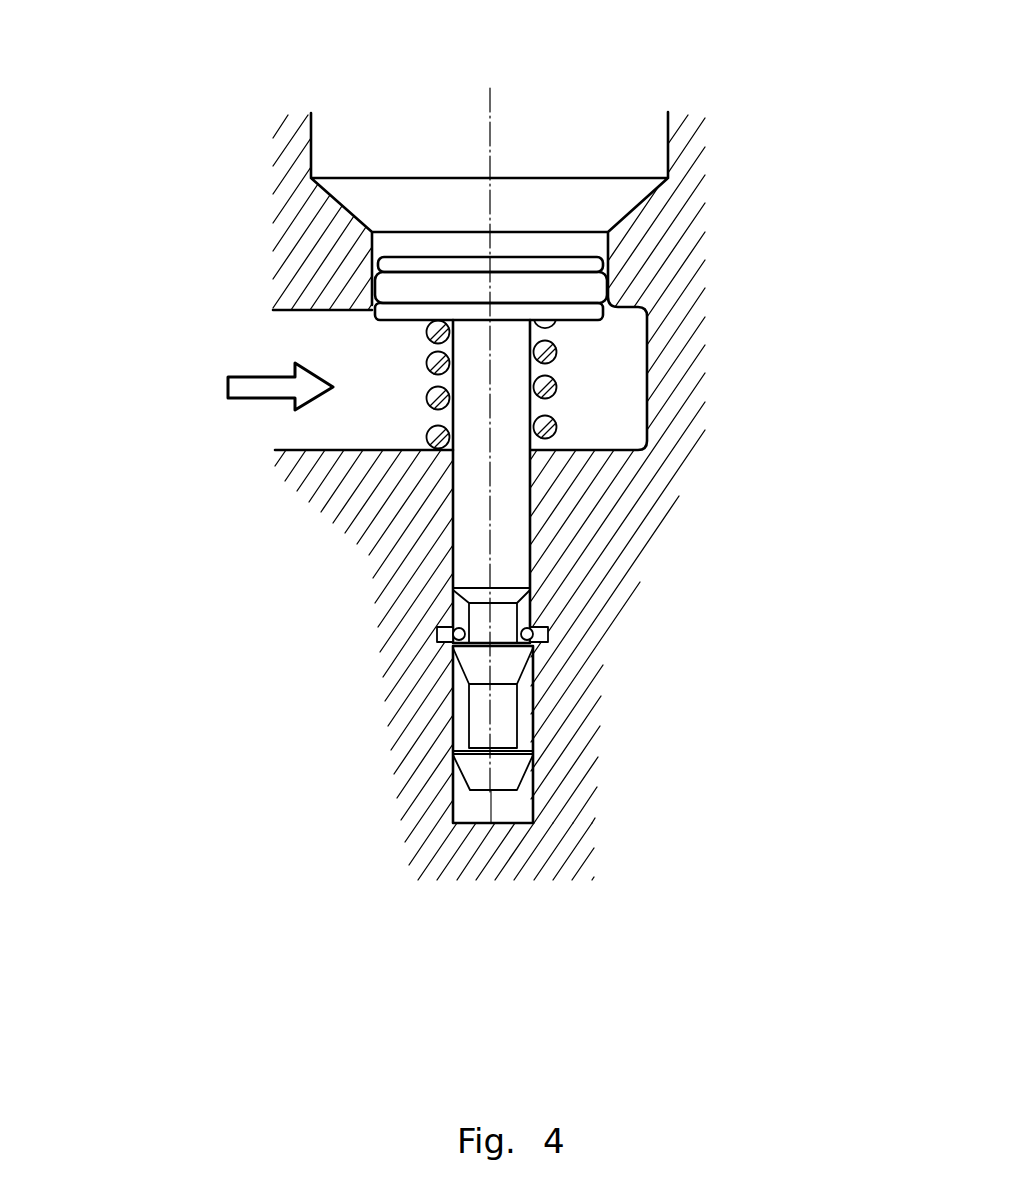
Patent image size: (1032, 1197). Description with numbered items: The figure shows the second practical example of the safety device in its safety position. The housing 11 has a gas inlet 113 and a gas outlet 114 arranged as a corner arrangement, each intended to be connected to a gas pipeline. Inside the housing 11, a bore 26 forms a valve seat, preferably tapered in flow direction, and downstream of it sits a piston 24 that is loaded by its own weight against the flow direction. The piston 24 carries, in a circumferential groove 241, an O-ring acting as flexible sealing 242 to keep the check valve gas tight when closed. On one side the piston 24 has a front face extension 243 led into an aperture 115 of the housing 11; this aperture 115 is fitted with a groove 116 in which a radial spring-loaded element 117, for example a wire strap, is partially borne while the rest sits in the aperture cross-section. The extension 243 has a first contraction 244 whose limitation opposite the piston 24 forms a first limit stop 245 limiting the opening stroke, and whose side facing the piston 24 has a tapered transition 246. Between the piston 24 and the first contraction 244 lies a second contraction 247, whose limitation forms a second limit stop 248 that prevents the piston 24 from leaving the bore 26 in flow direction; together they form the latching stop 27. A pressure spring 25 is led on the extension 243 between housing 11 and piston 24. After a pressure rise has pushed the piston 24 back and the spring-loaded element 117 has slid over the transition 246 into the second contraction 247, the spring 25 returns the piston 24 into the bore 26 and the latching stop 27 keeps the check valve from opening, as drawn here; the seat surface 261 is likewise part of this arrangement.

The housing 11 is at (372, 483).
The gas inlet 113 is at (318, 425).
The gas outlet 114 is at (516, 140).
The aperture 115 is at (476, 807).
The groove 116 is at (443, 632).
The spring-loaded element 117 is at (455, 640).
The piston 24 is at (497, 166).
The circumferential groove 241 is at (585, 288).
The flexible sealing 242 is at (607, 292).
The front face extension 243 is at (508, 400).
The first contraction 244 is at (506, 711).
The first limit stop 245 is at (527, 751).
The tapered transition 246 is at (507, 666).
The second contraction 247 is at (502, 617).
The second limit stop 248 is at (548, 634).
The pressure spring 25 is at (548, 352).
The bore 26 is at (373, 243).
The seat surface 261 is at (373, 303).
The latching stop 27 is at (528, 613).